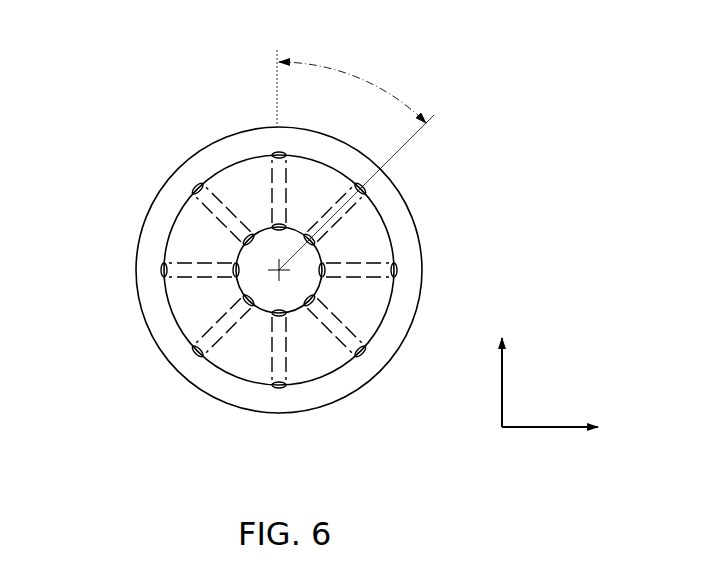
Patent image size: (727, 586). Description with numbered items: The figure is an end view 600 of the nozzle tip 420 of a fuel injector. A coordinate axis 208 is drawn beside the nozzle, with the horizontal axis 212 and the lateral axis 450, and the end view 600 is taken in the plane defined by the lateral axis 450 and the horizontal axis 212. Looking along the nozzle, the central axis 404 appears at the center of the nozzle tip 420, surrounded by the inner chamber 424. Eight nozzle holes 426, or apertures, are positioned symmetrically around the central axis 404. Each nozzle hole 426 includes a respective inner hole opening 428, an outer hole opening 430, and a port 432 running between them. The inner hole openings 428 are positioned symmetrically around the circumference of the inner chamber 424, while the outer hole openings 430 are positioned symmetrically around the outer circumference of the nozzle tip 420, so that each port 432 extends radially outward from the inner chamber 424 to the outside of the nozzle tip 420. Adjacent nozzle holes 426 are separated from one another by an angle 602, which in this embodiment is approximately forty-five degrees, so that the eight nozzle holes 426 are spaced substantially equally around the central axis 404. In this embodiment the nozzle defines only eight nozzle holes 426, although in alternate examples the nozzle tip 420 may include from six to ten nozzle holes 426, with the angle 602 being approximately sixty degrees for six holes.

The end view 600 is at (483, 85).
The angle 602 is at (362, 70).
The central axis 404 is at (279, 270).
The nozzle tip 420 is at (473, 262).
The inner chamber 424 is at (298, 308).
The nozzle hole 426 is at (202, 297).
The inner hole opening 428 is at (213, 238).
The outer hole opening 430 is at (163, 270).
The port 432 is at (157, 297).
The lateral axis 450 is at (502, 382).
The coordinate axis 208 is at (512, 452).
The horizontal axis 212 is at (544, 429).